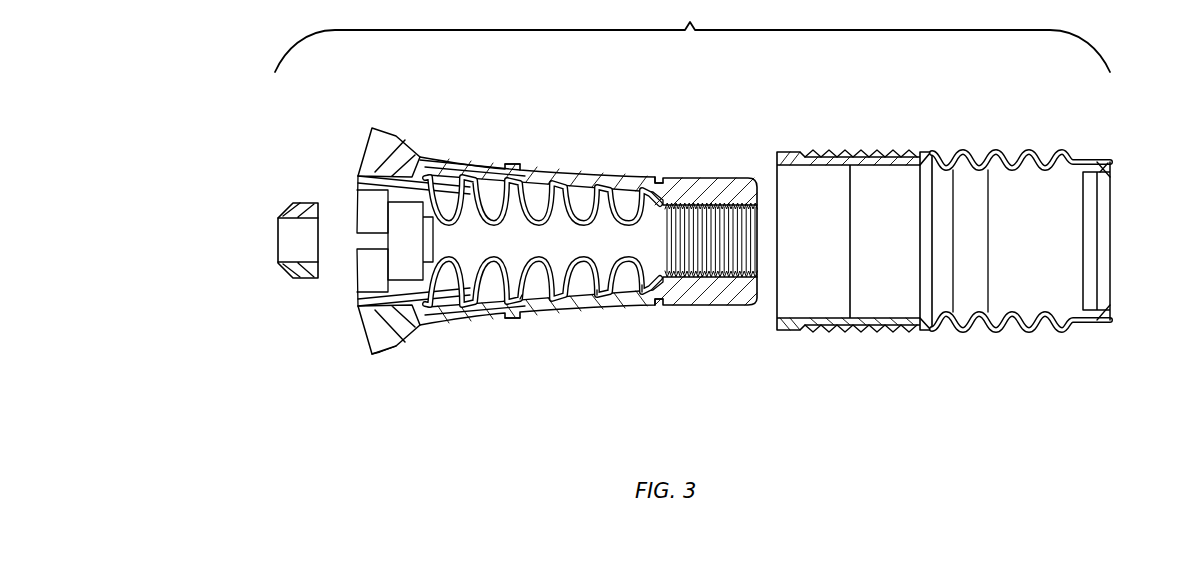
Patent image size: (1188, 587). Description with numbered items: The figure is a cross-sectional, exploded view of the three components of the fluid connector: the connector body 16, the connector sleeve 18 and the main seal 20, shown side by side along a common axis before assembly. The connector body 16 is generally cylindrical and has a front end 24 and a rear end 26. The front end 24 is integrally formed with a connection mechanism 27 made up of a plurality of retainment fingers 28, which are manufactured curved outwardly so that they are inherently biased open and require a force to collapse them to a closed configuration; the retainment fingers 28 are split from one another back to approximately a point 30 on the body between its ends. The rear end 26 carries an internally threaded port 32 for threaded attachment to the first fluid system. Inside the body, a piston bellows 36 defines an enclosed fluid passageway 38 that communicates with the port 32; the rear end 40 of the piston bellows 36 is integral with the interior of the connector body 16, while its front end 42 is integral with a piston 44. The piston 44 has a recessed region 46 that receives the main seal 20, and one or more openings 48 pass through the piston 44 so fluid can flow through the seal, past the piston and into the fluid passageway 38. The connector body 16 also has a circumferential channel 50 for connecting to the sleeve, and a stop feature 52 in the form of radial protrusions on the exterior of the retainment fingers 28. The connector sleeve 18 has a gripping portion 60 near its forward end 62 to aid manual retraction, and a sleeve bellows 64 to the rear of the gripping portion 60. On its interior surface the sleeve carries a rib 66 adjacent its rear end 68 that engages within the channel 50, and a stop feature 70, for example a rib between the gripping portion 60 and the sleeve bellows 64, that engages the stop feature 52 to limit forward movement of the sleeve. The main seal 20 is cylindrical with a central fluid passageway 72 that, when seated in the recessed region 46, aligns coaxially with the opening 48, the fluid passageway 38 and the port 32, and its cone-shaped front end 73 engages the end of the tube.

The connector body 16 is at (537, 250).
The connector sleeve 18 is at (971, 202).
The main seal 20 is at (268, 200).
The front end 24 is at (527, 250).
The rear end 26 is at (712, 231).
The connection mechanism 27 is at (378, 368).
The retainment fingers 28 is at (374, 143).
The point 30 is at (567, 307).
The internally threaded port 32 is at (758, 285).
The piston bellows 36 is at (604, 310).
The fluid passageway 38 is at (522, 245).
The rear end of piston bellows 40 is at (640, 272).
The front end of piston bellows 42 is at (447, 188).
The piston 44 is at (420, 182).
The recessed region 46 is at (418, 292).
The openings 48 is at (435, 240).
The circumferential channel 50 is at (659, 177).
The stop feature 52 is at (514, 164).
The gripping portion 60 is at (848, 152).
The forward end 62 is at (789, 152).
The sleeve bellows 64 is at (1029, 152).
The rib 66 is at (1112, 188).
The rear end 68 is at (1107, 173).
The stop feature 70 is at (927, 172).
The central fluid passageway 72 is at (285, 243).
The front end of main seal 73 is at (283, 212).